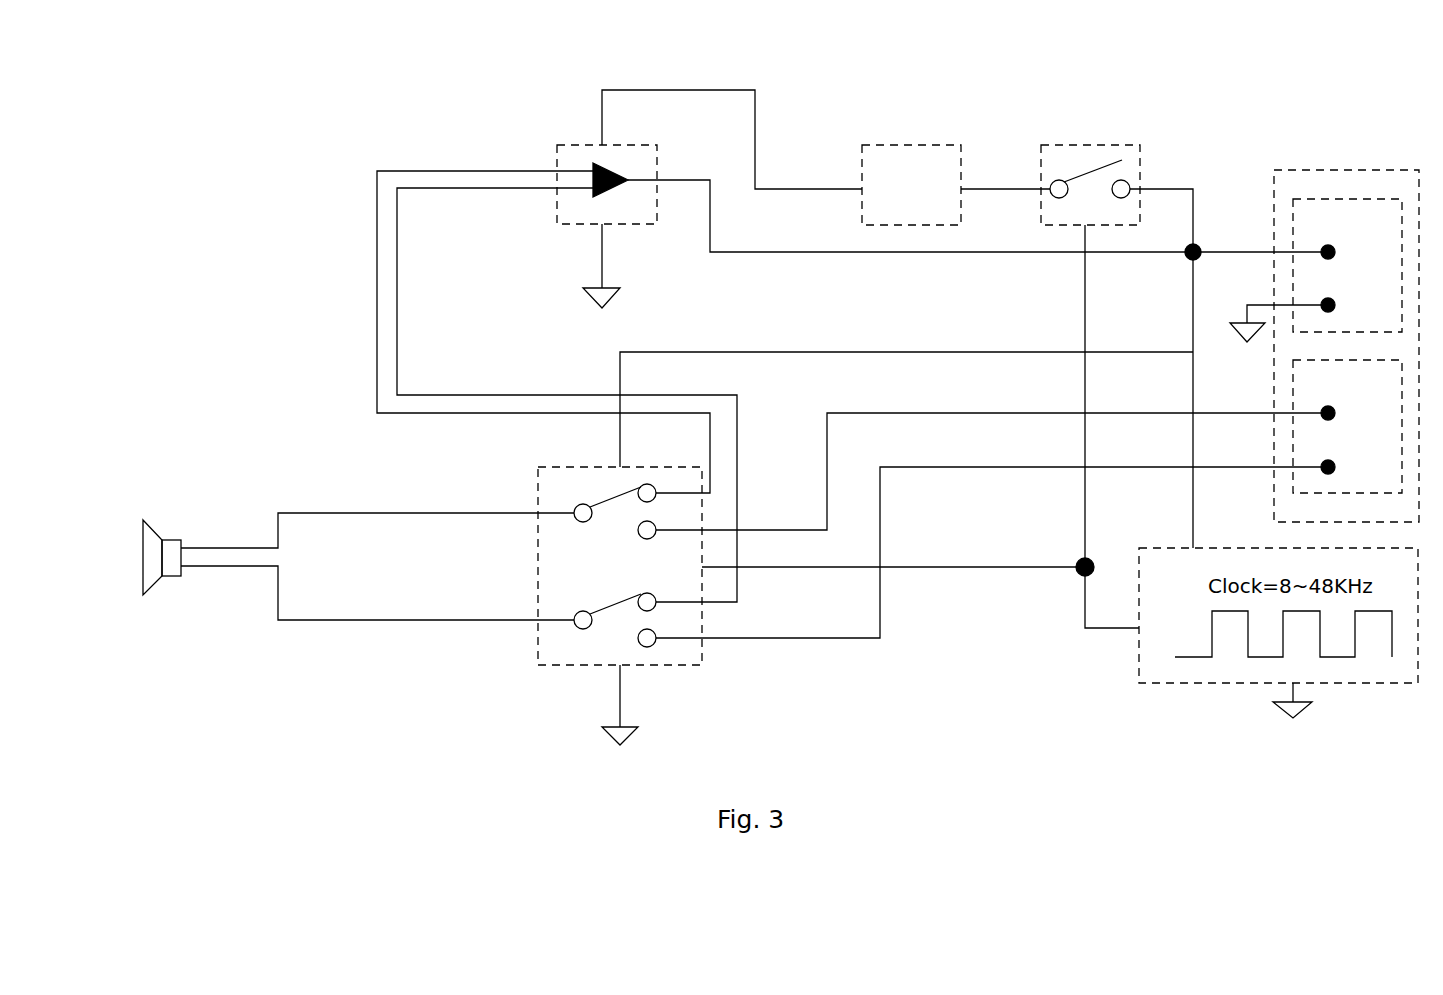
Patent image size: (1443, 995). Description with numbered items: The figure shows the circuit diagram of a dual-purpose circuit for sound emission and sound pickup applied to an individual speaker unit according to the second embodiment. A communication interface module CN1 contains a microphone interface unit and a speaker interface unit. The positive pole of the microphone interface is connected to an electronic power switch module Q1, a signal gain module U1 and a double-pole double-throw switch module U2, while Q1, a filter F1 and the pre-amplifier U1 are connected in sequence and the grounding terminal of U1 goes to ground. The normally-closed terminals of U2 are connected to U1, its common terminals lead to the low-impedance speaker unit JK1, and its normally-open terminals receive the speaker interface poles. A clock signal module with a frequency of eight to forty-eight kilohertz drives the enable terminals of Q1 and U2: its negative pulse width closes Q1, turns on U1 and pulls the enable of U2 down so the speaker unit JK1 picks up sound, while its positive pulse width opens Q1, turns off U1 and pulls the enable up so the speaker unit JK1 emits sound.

The signal gain module U1 is at (654, 199).
The filter F1 is at (911, 170).
The electronic power switch module Q1 is at (1090, 167).
The communication interface module CN1 is at (1324, 324).
The double-pole double-throw switch module U2 is at (620, 592).
The low-impedance speaker unit JK1 is at (123, 554).